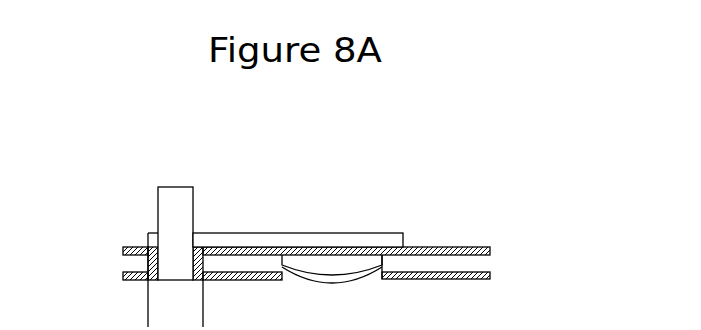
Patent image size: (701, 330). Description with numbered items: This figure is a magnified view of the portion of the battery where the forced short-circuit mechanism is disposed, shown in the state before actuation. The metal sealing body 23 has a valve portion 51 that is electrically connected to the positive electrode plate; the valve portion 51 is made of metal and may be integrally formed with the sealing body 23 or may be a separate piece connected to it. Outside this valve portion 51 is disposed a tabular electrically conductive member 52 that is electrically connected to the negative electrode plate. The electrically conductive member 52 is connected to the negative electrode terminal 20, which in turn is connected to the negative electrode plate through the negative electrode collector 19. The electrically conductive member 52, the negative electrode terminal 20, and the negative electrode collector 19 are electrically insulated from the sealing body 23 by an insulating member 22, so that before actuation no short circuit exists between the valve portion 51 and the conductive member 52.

The negative electrode collector 19 is at (167, 300).
The negative electrode terminal 20 is at (173, 215).
The insulating member 22 is at (142, 245).
The sealing body 23 is at (478, 263).
The valve portion 51 is at (353, 277).
The electrically conductive member 52 is at (305, 243).